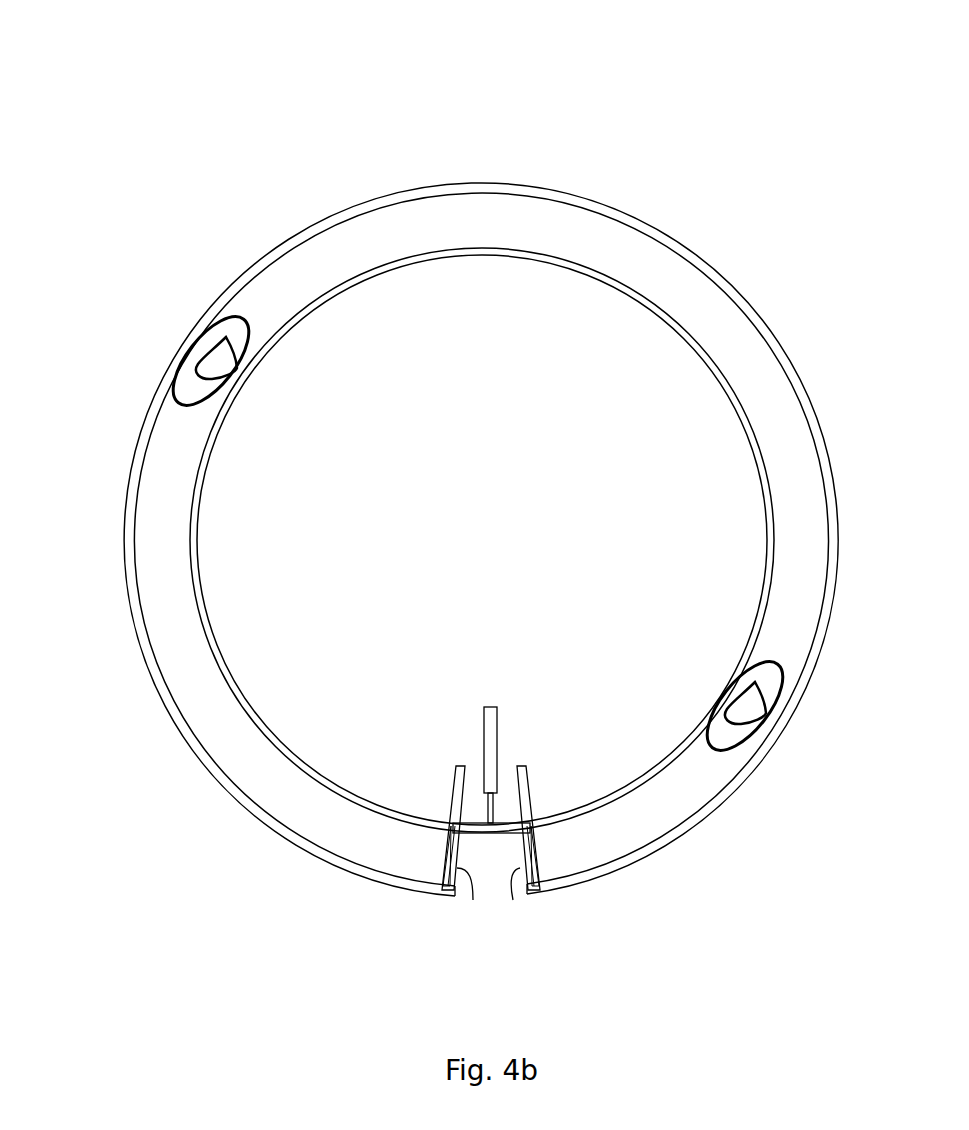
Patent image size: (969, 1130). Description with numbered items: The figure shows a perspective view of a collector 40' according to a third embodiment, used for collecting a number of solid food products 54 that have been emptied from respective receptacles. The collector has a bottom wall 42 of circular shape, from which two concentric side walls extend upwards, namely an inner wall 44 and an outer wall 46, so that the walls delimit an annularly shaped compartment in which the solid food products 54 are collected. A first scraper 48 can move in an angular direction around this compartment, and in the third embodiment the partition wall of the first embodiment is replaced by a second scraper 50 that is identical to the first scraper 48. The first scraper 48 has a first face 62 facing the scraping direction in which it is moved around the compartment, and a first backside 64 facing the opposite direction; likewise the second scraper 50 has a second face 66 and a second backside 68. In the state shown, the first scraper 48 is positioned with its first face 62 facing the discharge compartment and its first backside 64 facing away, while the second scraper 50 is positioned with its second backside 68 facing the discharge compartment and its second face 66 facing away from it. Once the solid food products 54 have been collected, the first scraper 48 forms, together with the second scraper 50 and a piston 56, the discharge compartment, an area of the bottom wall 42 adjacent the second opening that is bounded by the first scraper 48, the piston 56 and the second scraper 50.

The collector 40' is at (477, 511).
The bottom wall 42 is at (785, 487).
The inner wall 44 is at (207, 642).
The outer wall 46 is at (213, 765).
The first scraper 48 is at (440, 855).
The second scraper 50 is at (527, 867).
The solid food product 54 is at (225, 363).
The piston 56 is at (472, 825).
The first face 62 is at (473, 900).
The first backside 64 is at (448, 878).
The second face 66 is at (535, 867).
The second backside 68 is at (513, 900).